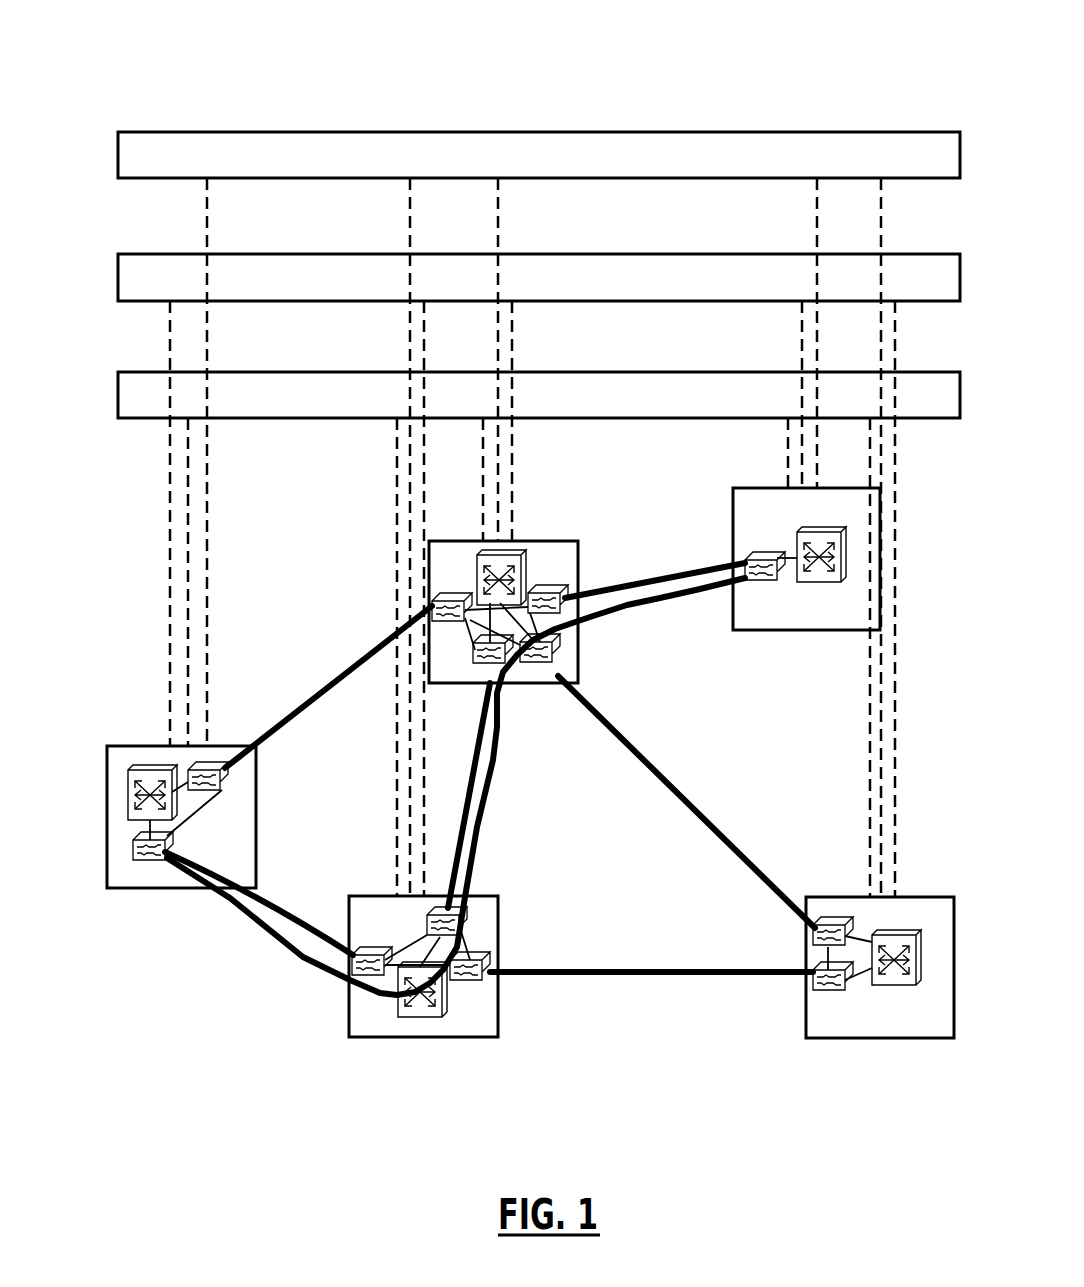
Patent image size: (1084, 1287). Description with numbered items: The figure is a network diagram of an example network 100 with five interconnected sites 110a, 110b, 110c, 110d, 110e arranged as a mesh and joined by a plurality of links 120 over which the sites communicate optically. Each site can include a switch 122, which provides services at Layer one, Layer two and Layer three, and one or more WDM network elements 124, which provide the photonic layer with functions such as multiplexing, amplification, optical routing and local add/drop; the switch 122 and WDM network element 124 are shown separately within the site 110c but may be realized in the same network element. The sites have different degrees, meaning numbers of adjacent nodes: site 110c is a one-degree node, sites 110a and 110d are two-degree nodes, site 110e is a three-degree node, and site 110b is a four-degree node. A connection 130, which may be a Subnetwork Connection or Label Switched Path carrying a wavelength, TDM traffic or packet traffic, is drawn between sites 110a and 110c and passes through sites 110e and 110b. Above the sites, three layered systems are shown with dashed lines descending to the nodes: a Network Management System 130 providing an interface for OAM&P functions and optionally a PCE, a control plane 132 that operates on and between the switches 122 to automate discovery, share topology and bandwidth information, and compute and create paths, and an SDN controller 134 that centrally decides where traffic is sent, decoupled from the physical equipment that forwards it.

The network 100 is at (612, 44).
The SDN controller 134 is at (697, 132).
The control plane 132 is at (697, 254).
The Network Management System 130 is at (697, 372).
The links 120 is at (328, 698).
The site 110a is at (107, 855).
The site 110b is at (540, 541).
The site 110c is at (822, 570).
The site 110d is at (853, 1038).
The site 110e is at (349, 1020).
The switch 122 is at (825, 528).
The WDM network element 124 is at (766, 553).